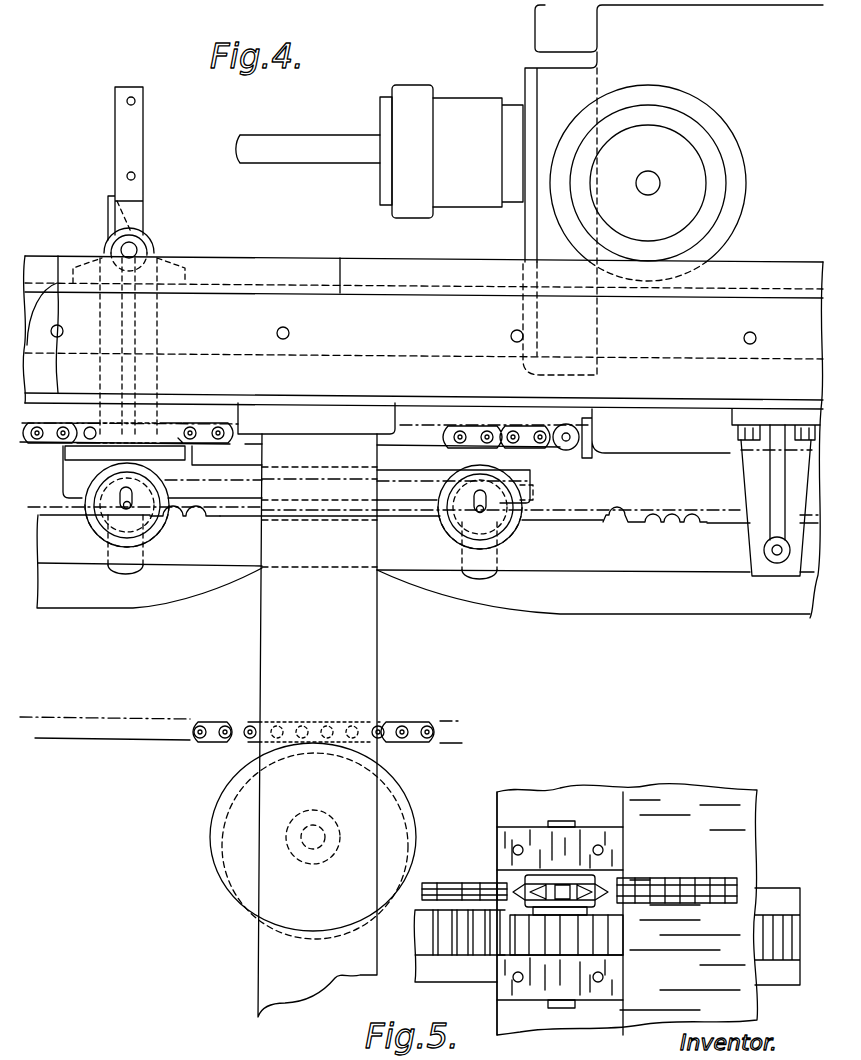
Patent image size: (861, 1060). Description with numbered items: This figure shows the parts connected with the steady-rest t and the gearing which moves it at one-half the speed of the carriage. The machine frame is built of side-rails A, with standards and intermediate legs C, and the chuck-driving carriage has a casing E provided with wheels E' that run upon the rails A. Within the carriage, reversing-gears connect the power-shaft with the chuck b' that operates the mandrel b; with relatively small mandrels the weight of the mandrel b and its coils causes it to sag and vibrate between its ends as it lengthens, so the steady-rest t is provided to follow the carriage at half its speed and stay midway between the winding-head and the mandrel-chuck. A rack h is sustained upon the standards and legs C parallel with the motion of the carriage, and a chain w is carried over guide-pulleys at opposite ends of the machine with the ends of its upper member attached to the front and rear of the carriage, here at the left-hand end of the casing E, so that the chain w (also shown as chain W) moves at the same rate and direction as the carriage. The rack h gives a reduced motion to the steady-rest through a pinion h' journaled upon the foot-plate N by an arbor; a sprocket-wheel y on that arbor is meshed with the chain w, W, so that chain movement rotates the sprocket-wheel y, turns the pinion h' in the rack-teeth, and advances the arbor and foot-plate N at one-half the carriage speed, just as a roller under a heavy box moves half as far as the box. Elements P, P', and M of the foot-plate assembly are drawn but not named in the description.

In FIG. 4, the side-rails A is at (327, 257).
In FIG. 4, the steady-rest t is at (113, 153).
In FIG. 4, the mandrel b is at (308, 165).
In FIG. 4, the chuck b' is at (451, 135).
In FIG. 4, the casing E is at (673, 190).
In FIG. 4, the wheels E' is at (667, 183).
In FIG. 4, the intermediate legs C is at (258, 652).
In FIG. 4, the chain w is at (507, 428).
In FIG. 5, the chain W is at (665, 877).
In FIG. 4, the foot-plate N is at (533, 488).
In FIG. 5, the foot-plate N is at (750, 1000).
In FIG. 4, the rack h is at (423, 550).
In FIG. 5, the rack h is at (596, 919).
In FIG. 5, the pinion h' is at (542, 966).
In FIG. 5, the block P is at (569, 901).
In FIG. 5, the block tab P' is at (566, 794).
In FIG. 5, the sprocket-wheel y is at (525, 880).
In FIG. 5, the frame M is at (495, 810).